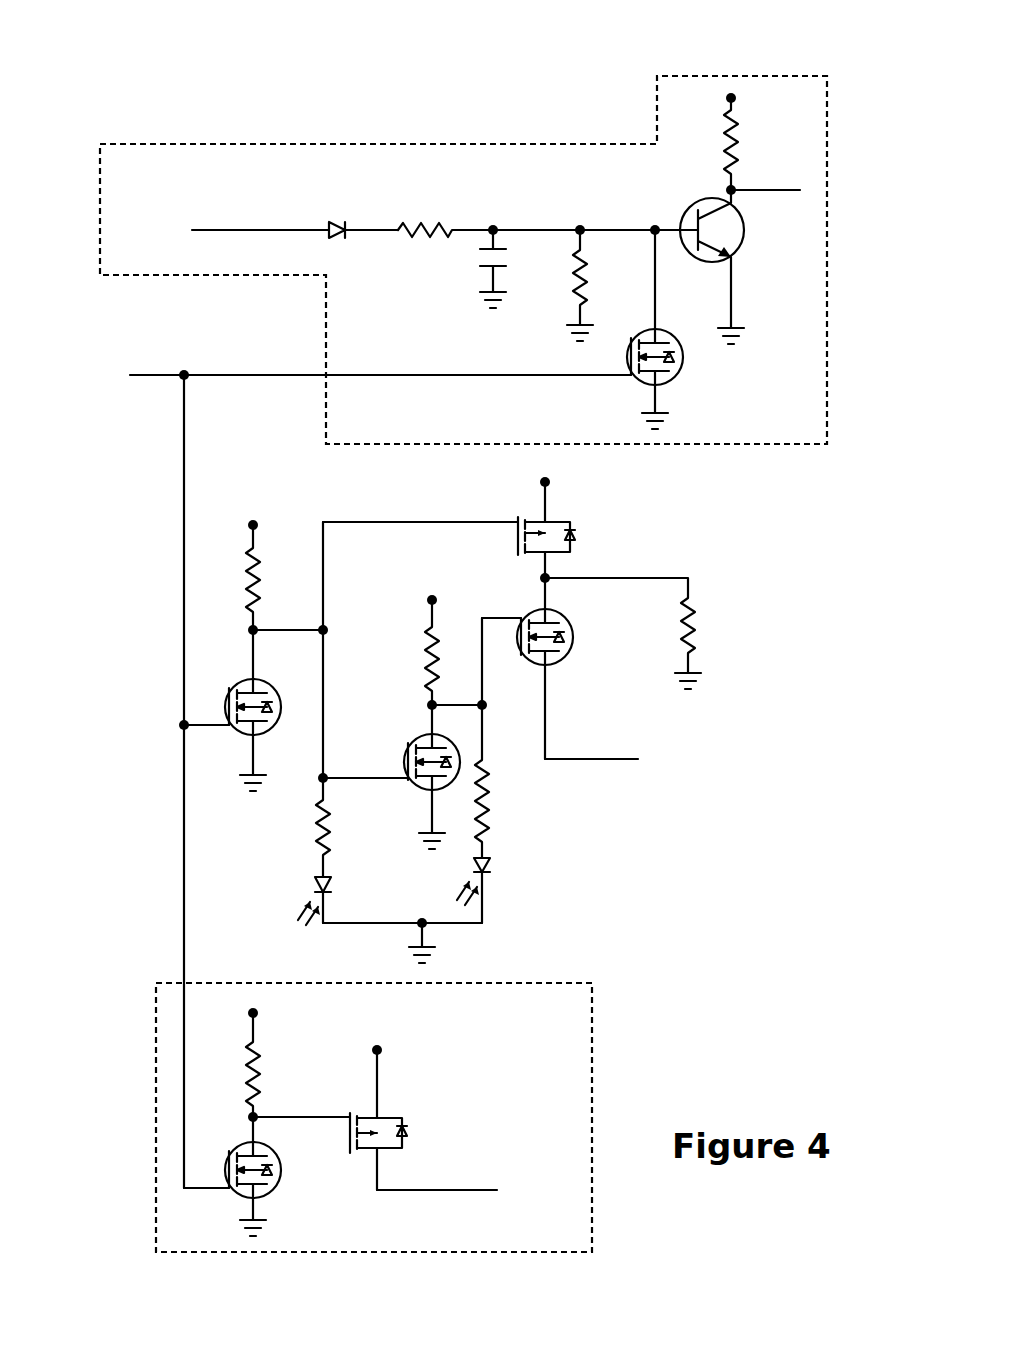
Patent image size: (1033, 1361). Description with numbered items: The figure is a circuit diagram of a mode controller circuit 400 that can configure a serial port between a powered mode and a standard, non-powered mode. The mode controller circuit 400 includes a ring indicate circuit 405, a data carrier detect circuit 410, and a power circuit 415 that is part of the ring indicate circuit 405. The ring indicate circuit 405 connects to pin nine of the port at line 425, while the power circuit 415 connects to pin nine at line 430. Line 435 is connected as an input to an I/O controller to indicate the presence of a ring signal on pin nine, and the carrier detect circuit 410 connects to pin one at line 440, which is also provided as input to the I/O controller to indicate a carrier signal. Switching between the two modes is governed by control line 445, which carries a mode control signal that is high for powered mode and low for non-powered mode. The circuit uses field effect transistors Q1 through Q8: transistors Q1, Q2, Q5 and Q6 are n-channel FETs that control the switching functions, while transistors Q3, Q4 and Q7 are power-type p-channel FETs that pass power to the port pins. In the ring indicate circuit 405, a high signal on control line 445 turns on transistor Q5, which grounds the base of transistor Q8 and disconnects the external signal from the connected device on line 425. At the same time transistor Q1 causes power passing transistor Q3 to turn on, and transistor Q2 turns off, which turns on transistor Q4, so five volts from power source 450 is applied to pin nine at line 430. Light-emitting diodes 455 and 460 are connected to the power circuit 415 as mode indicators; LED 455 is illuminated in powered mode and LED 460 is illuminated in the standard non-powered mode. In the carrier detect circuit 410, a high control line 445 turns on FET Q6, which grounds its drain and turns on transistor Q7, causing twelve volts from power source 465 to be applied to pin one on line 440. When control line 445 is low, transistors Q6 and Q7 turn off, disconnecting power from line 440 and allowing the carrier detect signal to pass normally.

The mode controller circuit 400 is at (688, 62).
The ring indicate circuit 405 is at (778, 444).
The data carrier detect circuit 410 is at (592, 1013).
The power circuit 415 is at (720, 928).
The line 425 is at (208, 230).
The line 430 is at (624, 762).
The line 435 is at (790, 192).
The line 440 is at (458, 1188).
The control line 445 is at (143, 370).
The power source 450 is at (543, 483).
The LED 455 is at (490, 865).
The LED 460 is at (317, 890).
The power source 465 is at (374, 1050).
The transistor Q1 is at (246, 737).
The transistor Q2 is at (418, 788).
The power passing transistor Q3 is at (515, 537).
The transistor Q4 is at (558, 664).
The transistor Q5 is at (676, 378).
The FET Q6 is at (274, 1187).
The transistor Q7 is at (412, 1132).
The transistor Q8 is at (692, 214).